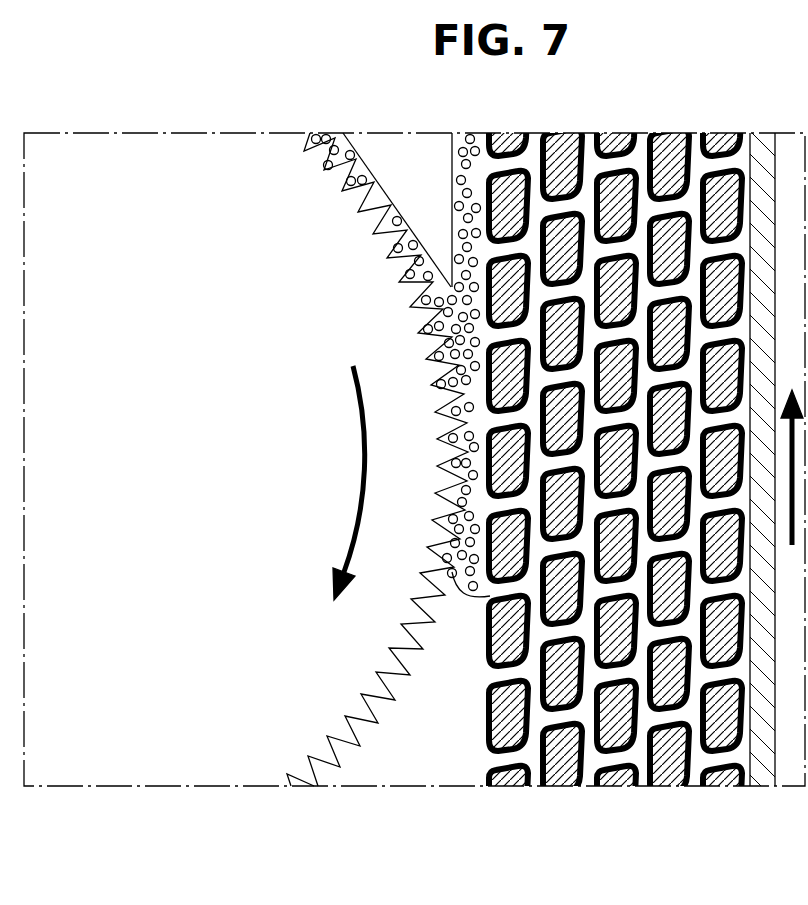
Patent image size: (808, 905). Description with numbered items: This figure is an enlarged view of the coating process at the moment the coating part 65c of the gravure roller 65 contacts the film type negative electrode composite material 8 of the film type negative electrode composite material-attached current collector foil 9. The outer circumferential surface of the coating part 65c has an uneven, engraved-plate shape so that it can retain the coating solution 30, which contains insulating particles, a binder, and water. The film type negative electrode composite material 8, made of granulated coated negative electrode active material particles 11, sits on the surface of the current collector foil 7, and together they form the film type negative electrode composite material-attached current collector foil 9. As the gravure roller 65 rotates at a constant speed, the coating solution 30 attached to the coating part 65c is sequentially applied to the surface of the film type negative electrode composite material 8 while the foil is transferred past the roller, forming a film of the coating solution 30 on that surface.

The coating part 65c is at (240, 172).
The gravure roller 65 is at (331, 433).
The coating solution 30 is at (377, 153).
The coated negative electrode active material particles 11 is at (565, 162).
The film type negative electrode composite material 8 is at (745, 793).
The current collector foil 7 is at (760, 481).
The film type negative electrode composite material-attached current collector foil 9 is at (626, 492).